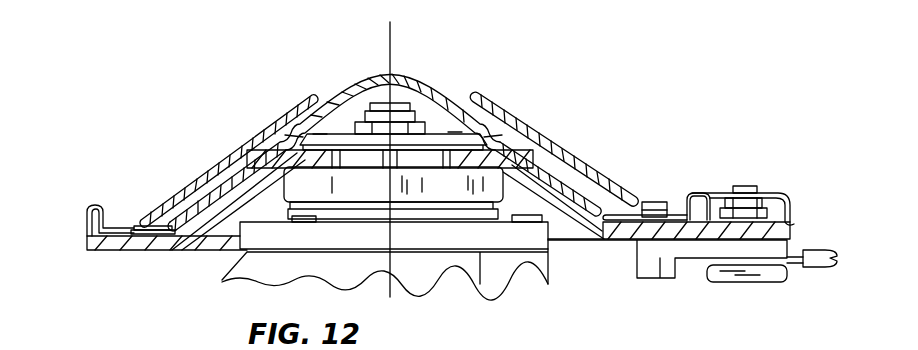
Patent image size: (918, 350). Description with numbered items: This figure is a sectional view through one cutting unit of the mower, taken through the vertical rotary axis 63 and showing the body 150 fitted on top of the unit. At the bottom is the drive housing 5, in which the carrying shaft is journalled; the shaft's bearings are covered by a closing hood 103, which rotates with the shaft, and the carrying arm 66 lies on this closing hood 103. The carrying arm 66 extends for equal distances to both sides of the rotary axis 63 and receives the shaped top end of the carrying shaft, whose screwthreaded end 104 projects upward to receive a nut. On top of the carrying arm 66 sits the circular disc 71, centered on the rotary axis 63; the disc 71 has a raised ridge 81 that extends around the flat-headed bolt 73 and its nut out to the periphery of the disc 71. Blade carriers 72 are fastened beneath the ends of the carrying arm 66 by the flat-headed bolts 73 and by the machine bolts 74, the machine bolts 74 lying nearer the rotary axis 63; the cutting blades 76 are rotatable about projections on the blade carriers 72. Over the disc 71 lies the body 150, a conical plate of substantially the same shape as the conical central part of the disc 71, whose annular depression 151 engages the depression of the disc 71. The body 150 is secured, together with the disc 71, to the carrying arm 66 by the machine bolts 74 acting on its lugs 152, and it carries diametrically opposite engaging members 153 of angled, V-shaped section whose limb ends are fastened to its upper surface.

The rotary axis 63 is at (390, 41).
The screwthreaded end 104 is at (380, 103).
The body 150 is at (427, 82).
The annular depression 151 is at (500, 115).
The engaging members 153 is at (257, 145).
The lugs 152 is at (133, 225).
The closing hood 103 is at (300, 184).
The drive housing 5 is at (262, 263).
The carrying arm 66 is at (565, 196).
The machine bolts 74 is at (662, 198).
The raised ridge 81 is at (690, 193).
The disc 71 is at (705, 190).
The blade carriers 72 is at (635, 259).
The flat-headed bolts 73 is at (737, 280).
The cutting blades 76 is at (825, 265).